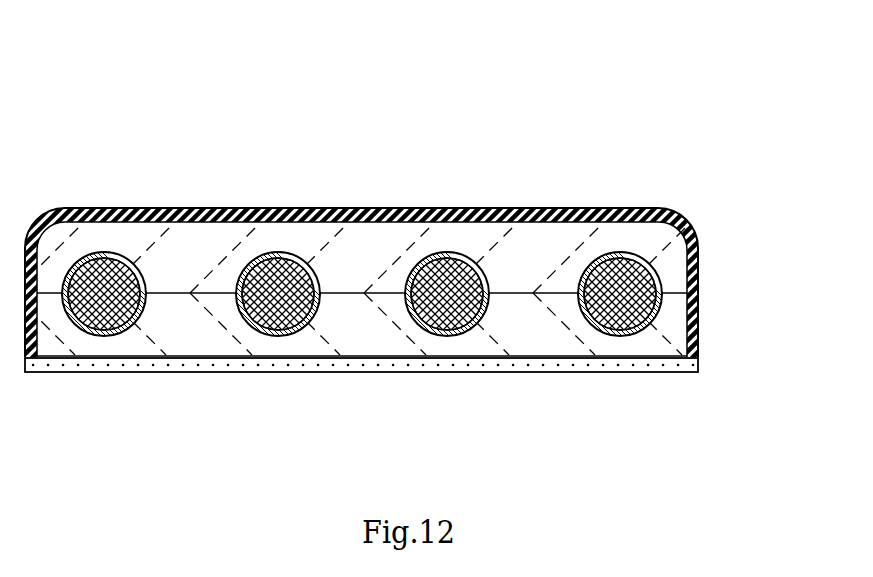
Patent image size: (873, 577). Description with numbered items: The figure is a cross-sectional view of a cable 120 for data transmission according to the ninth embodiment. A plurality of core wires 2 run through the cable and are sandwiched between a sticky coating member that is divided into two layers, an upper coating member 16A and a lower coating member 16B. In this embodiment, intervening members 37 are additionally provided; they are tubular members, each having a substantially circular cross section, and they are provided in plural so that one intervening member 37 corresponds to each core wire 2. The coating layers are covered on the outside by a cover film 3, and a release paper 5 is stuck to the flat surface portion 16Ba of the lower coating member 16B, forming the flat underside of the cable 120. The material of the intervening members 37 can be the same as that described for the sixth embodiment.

The core wire 2 is at (104, 252).
The cover film 3 is at (367, 208).
The release paper 5 is at (65, 367).
The upper coating member 16A is at (668, 257).
The lower coating member 16B is at (670, 323).
The flat surface portion 16Ba is at (617, 362).
The intervening member 37 is at (136, 326).
The cable 120 is at (543, 139).